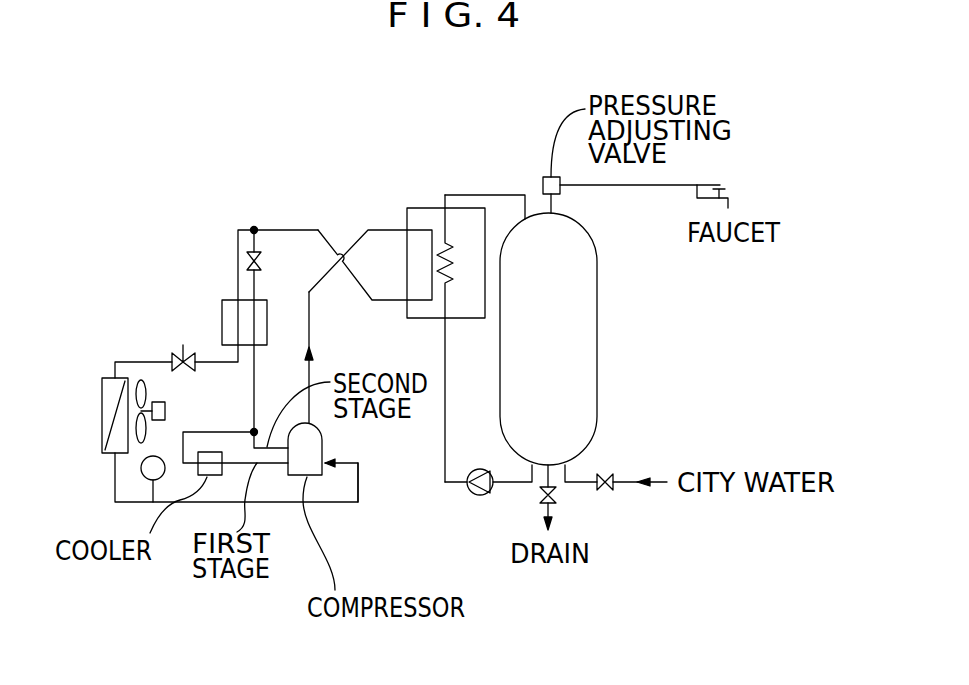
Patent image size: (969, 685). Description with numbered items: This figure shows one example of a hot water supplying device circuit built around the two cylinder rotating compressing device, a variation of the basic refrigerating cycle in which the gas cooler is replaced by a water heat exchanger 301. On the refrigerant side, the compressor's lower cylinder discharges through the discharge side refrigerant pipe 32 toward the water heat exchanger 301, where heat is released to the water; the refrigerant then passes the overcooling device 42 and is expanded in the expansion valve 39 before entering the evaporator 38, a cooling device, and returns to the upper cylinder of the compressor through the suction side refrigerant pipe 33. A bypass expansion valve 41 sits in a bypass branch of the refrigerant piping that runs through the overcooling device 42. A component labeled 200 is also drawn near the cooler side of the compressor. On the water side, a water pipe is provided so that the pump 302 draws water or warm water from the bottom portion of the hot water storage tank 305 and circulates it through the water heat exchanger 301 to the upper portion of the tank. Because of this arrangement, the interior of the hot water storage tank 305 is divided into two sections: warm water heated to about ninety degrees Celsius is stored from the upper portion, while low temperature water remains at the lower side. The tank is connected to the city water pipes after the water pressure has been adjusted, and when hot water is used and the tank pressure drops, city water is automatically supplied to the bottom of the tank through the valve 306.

The discharge side refrigerant pipe 32 is at (310, 328).
The suction side refrigerant pipe 33 is at (360, 478).
The evaporator 38 is at (101, 409).
The expansion valve 39 is at (183, 350).
The bypass expansion valve 41 is at (262, 261).
The overcooling device 42 is at (222, 312).
The accumulator 200 is at (143, 470).
The water heat exchanger 301 is at (433, 186).
The pump 302 is at (468, 491).
The hot water storage tank 305 is at (583, 315).
The valve 306 is at (607, 490).